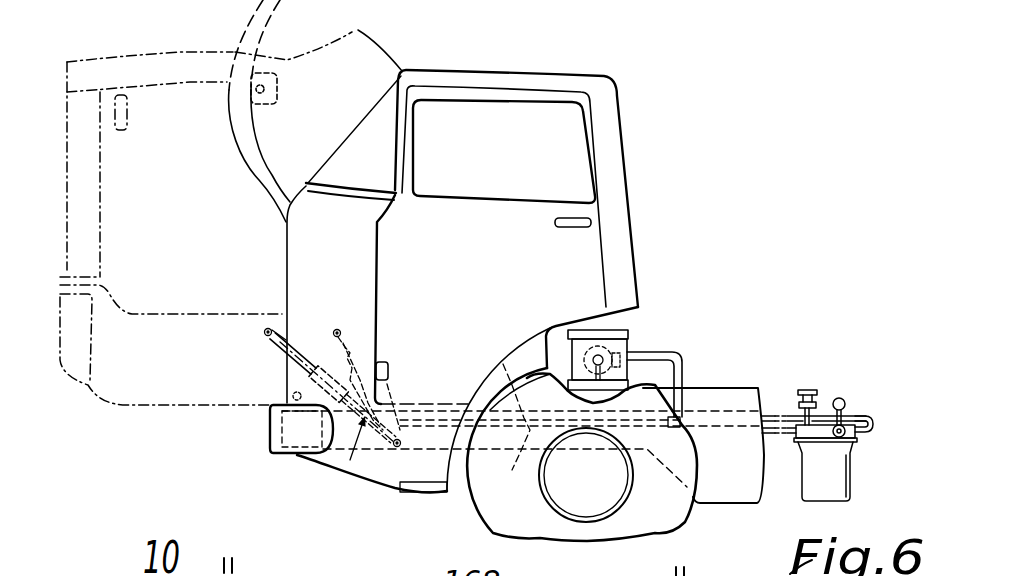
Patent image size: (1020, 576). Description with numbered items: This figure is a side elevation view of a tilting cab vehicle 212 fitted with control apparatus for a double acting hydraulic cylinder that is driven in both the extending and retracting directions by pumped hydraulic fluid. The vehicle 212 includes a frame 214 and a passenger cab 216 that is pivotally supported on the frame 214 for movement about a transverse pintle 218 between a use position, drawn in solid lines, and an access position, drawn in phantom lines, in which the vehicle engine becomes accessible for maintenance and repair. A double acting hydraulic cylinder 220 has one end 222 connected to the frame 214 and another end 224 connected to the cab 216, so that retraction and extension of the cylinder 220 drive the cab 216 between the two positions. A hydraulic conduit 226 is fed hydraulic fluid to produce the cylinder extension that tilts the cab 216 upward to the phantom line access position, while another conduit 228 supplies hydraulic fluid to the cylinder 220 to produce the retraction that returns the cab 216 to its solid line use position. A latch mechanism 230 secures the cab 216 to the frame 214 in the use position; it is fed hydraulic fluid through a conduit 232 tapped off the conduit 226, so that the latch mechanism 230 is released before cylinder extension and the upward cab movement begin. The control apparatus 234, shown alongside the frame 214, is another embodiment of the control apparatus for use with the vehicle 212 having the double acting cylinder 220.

The vehicle 212 is at (630, 96).
The frame 214 is at (740, 390).
The passenger cab 216 is at (318, 37).
The transverse pintle 218 is at (283, 390).
The double acting hydraulic cylinder 220 is at (350, 460).
The one end 222 is at (396, 447).
The another end 224 is at (337, 333).
The hydraulic conduit 226 is at (561, 475).
The conduit 228 is at (503, 364).
The latch mechanism 230 is at (632, 345).
The conduit 232 is at (680, 356).
The control apparatus 234 is at (878, 407).